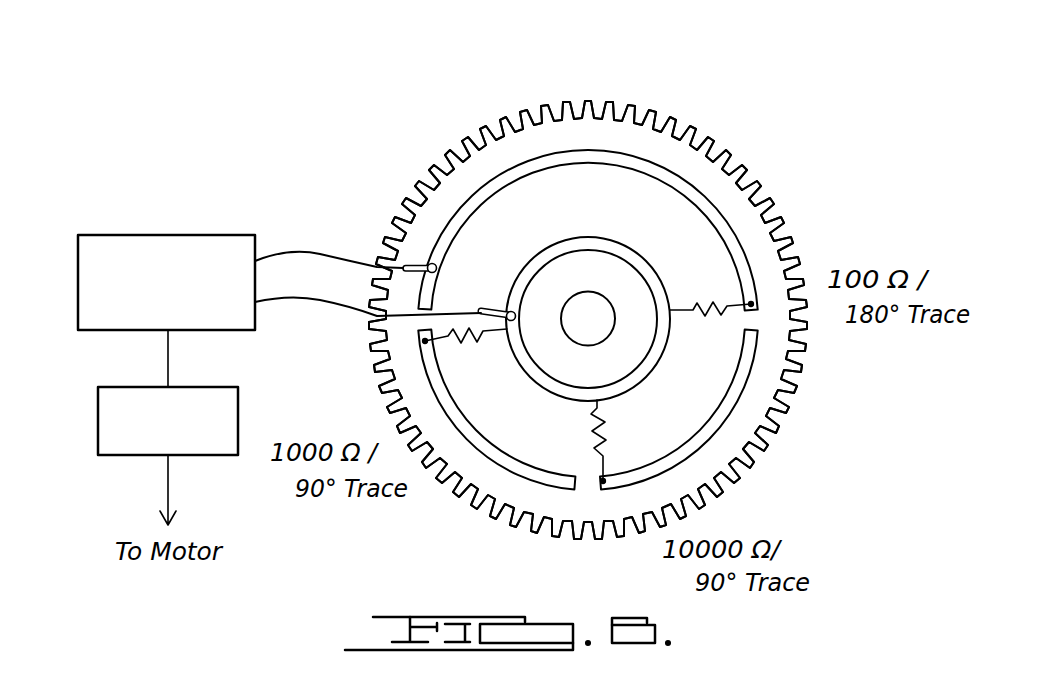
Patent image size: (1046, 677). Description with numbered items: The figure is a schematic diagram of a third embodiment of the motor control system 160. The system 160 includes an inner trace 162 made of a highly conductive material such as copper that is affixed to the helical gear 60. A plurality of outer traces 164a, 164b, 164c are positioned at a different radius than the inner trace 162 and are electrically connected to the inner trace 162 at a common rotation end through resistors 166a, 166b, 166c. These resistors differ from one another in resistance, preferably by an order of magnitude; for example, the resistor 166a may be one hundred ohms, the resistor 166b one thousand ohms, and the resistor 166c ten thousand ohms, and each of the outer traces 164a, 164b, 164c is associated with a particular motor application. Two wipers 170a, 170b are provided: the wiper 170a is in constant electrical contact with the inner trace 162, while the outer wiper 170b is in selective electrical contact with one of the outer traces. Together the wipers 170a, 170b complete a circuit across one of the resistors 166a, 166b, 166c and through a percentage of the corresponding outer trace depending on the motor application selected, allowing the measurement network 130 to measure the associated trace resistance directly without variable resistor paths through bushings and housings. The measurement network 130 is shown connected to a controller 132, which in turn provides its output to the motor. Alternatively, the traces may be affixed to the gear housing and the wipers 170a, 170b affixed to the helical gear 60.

The helical gear 60 is at (458, 148).
The measurement network 130 is at (176, 237).
The controller 132 is at (218, 396).
The motor control system 160 is at (826, 158).
The inner trace 162 is at (582, 238).
The outer trace 164a is at (603, 152).
The outer trace 164b is at (523, 472).
The outer trace 164c is at (730, 410).
The resistor 166a is at (705, 300).
The resistor 166b is at (488, 333).
The resistor 166c is at (612, 440).
The wiper 170a is at (413, 263).
The wiper 170b is at (490, 305).